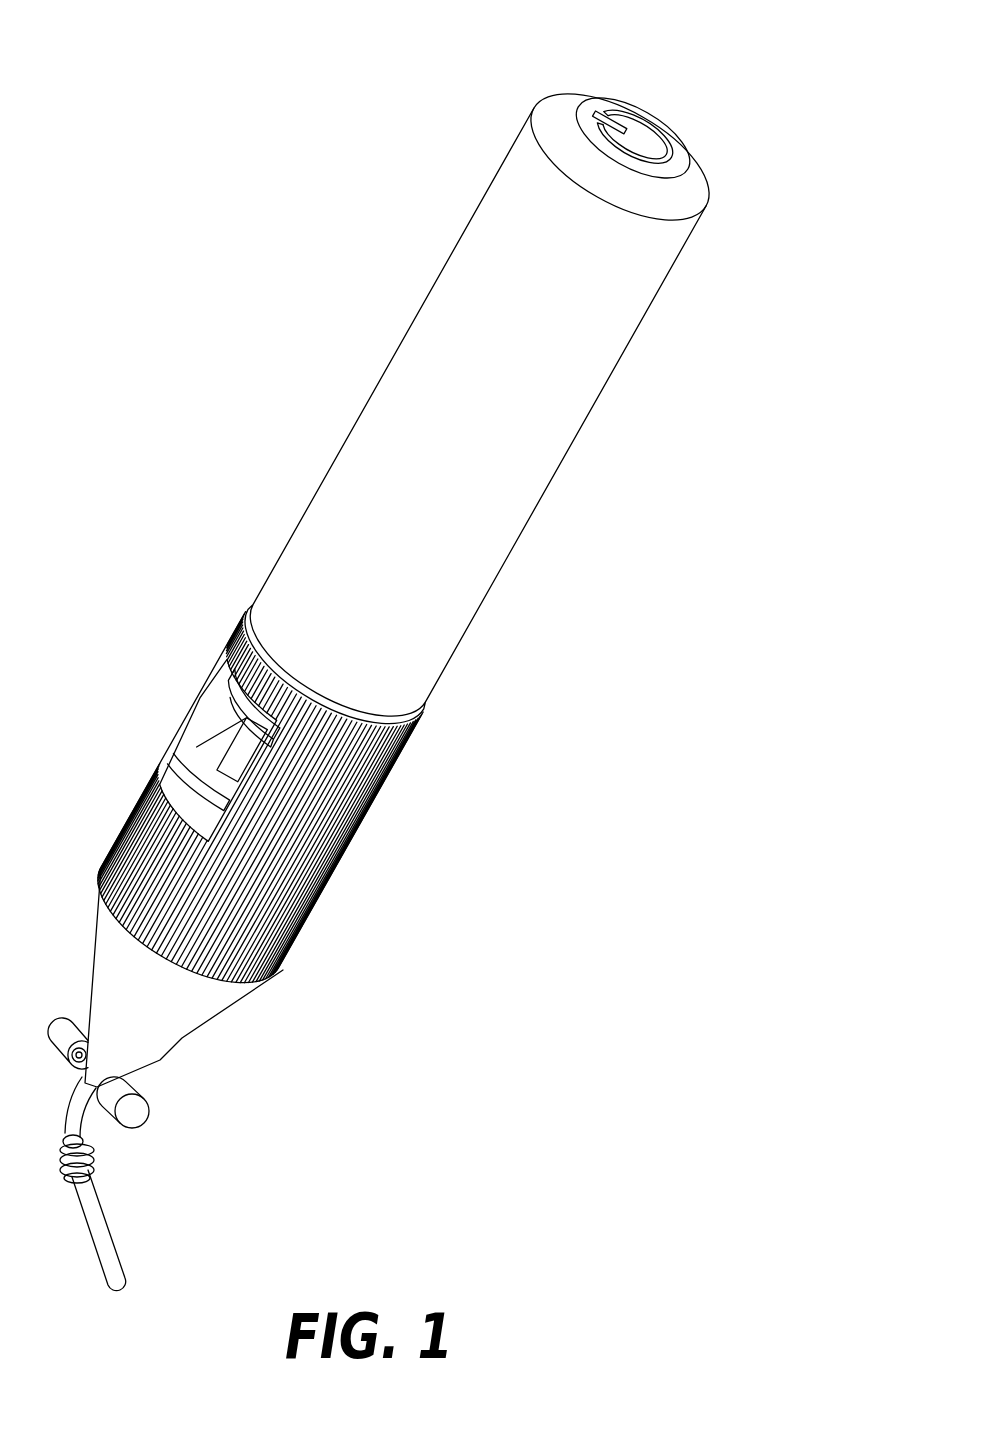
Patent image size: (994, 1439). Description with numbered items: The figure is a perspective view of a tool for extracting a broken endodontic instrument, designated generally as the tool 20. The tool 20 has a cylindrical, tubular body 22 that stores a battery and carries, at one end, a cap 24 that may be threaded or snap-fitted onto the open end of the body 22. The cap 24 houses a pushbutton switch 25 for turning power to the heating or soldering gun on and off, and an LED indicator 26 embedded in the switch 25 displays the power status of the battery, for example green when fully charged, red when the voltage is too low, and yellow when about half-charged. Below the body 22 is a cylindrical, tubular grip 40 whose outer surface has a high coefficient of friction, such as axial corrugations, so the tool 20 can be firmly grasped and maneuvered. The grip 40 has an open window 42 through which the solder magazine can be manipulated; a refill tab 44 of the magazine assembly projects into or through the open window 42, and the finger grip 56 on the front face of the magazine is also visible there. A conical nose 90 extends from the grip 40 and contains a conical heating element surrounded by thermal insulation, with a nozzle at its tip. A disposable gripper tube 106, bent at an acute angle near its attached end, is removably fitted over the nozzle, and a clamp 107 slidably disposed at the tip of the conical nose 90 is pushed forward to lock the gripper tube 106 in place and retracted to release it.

The tool for extracting broken endodontic instrument 20 is at (264, 404).
The body 22 is at (466, 428).
The cap 24 is at (621, 154).
The pushbutton switch 25 is at (636, 137).
The LED indicator 26 is at (633, 135).
The grip 40 is at (251, 811).
The open window 42 is at (250, 811).
The refill tab 44 is at (252, 708).
The finger grip 56 is at (215, 753).
The conical nose 90 is at (204, 1000).
The gripper tube 106 is at (107, 1220).
The clamp 107 is at (140, 1111).